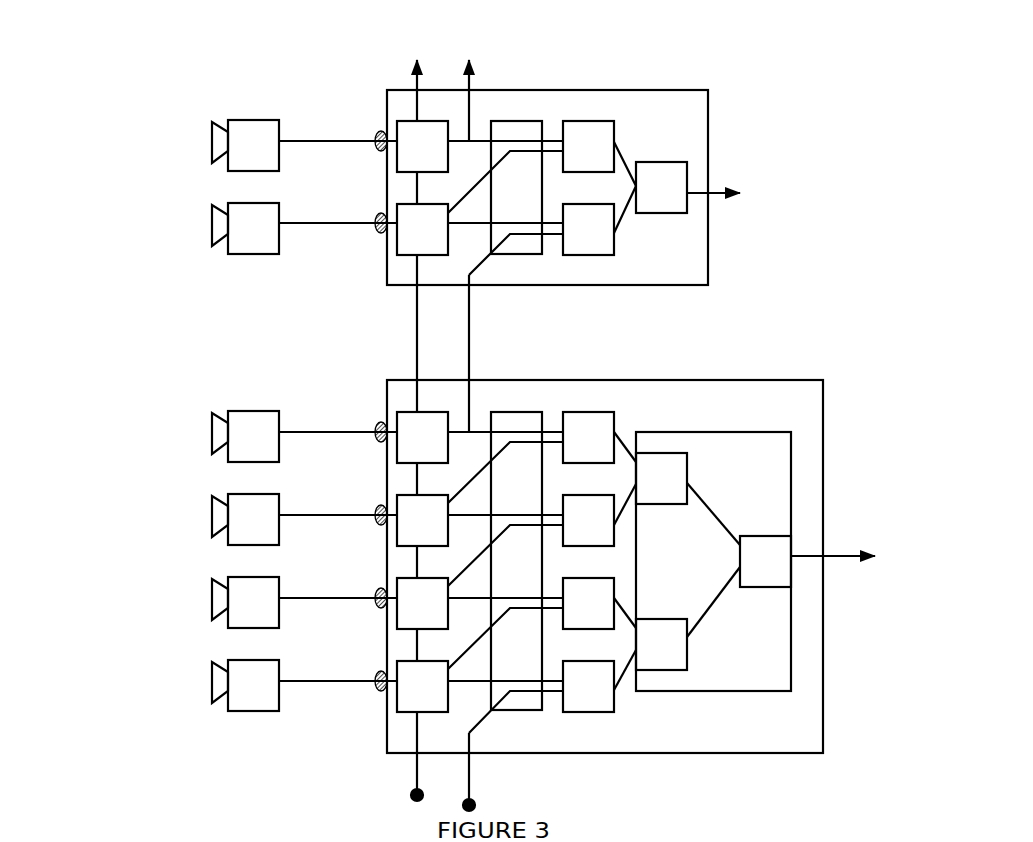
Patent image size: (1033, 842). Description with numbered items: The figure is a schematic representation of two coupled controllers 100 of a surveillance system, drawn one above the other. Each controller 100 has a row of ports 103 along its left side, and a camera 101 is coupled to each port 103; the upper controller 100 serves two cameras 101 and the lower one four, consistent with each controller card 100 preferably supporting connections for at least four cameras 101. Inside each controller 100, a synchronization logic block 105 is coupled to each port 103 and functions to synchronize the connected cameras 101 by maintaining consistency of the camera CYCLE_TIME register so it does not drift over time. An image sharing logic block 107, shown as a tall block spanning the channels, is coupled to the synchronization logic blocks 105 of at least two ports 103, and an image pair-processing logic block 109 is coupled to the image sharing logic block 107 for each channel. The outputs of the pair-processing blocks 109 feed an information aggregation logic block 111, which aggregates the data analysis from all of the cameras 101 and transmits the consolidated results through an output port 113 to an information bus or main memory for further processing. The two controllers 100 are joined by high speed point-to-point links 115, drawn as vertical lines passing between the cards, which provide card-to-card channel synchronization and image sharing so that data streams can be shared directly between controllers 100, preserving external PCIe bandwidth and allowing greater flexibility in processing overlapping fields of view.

The controller 100 is at (365, 66).
The camera 101 is at (201, 224).
The port 103 is at (374, 693).
The synchronization logic block 105 is at (436, 234).
The image sharing logic block 107 is at (511, 119).
The image pair-processing logic block 109 is at (606, 119).
The information aggregation logic block 111 is at (679, 159).
The output port 113 is at (868, 544).
The point-to-point link 115 is at (465, 347).